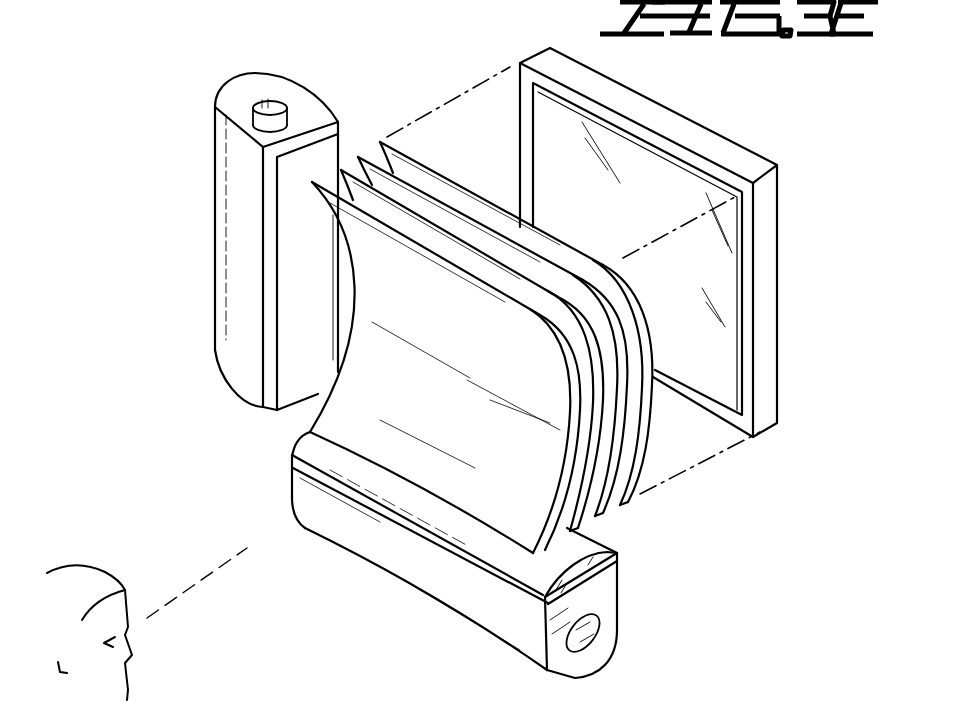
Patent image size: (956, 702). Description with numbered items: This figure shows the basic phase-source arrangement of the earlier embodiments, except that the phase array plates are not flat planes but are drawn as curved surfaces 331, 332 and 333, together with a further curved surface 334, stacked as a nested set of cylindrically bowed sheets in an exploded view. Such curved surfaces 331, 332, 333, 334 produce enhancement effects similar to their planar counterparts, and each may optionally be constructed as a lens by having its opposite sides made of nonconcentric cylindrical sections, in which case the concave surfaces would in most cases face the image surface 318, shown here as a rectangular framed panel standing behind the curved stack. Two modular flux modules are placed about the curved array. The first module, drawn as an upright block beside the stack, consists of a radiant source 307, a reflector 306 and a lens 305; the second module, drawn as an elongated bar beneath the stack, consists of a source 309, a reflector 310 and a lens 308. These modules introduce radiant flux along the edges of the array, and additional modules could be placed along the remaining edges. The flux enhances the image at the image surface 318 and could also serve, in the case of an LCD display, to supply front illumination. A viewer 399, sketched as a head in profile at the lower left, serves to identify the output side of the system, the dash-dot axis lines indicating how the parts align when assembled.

The lens 305 is at (287, 302).
The reflector 306 is at (232, 244).
The radiant source 307 is at (255, 110).
The lens 308 is at (607, 553).
The source 309 is at (587, 620).
The reflector 310 is at (427, 583).
The image surface 318 is at (720, 278).
The curved surface 331 is at (483, 188).
The curved surface 332 is at (530, 250).
The curved surface 333 is at (590, 333).
The fourth lens sheet 334 is at (587, 418).
The viewer 399 is at (117, 530).